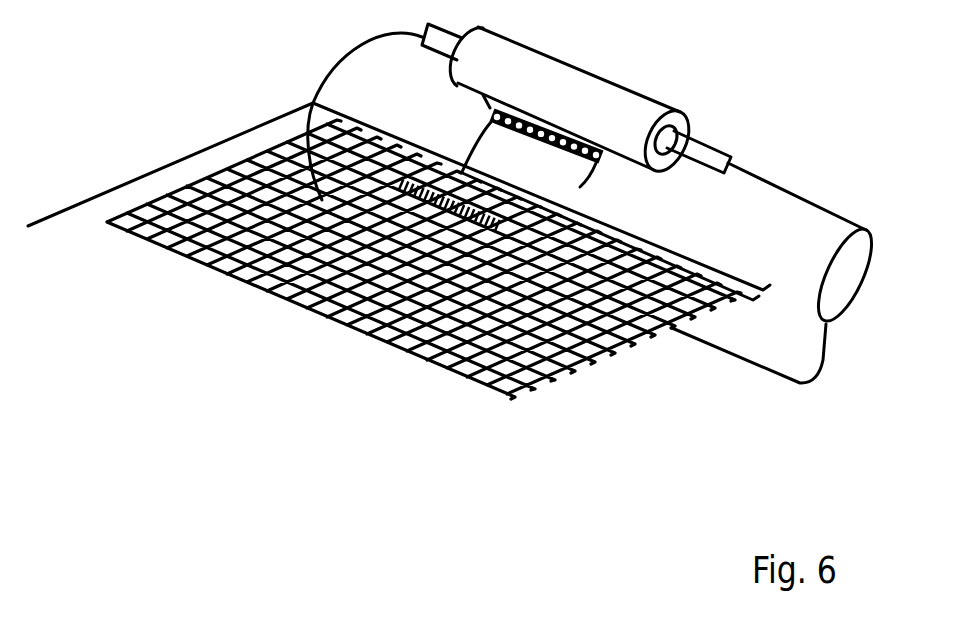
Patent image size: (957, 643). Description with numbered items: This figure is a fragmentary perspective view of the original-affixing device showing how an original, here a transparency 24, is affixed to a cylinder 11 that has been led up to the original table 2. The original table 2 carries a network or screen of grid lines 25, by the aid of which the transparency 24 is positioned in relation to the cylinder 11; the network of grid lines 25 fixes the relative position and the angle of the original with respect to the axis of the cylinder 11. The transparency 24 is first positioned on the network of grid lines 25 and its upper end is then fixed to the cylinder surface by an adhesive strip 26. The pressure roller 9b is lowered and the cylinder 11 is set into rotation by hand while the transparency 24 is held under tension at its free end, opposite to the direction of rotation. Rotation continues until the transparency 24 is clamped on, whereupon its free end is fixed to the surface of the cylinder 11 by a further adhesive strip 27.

The original table 2 is at (100, 207).
The pressure roller 9b is at (633, 106).
The cylinder 11 is at (783, 215).
The transparency 24 is at (563, 185).
The network of grid lines 25 is at (373, 330).
The adhesive strip 26 is at (487, 110).
The adhesive strip 27 is at (488, 210).